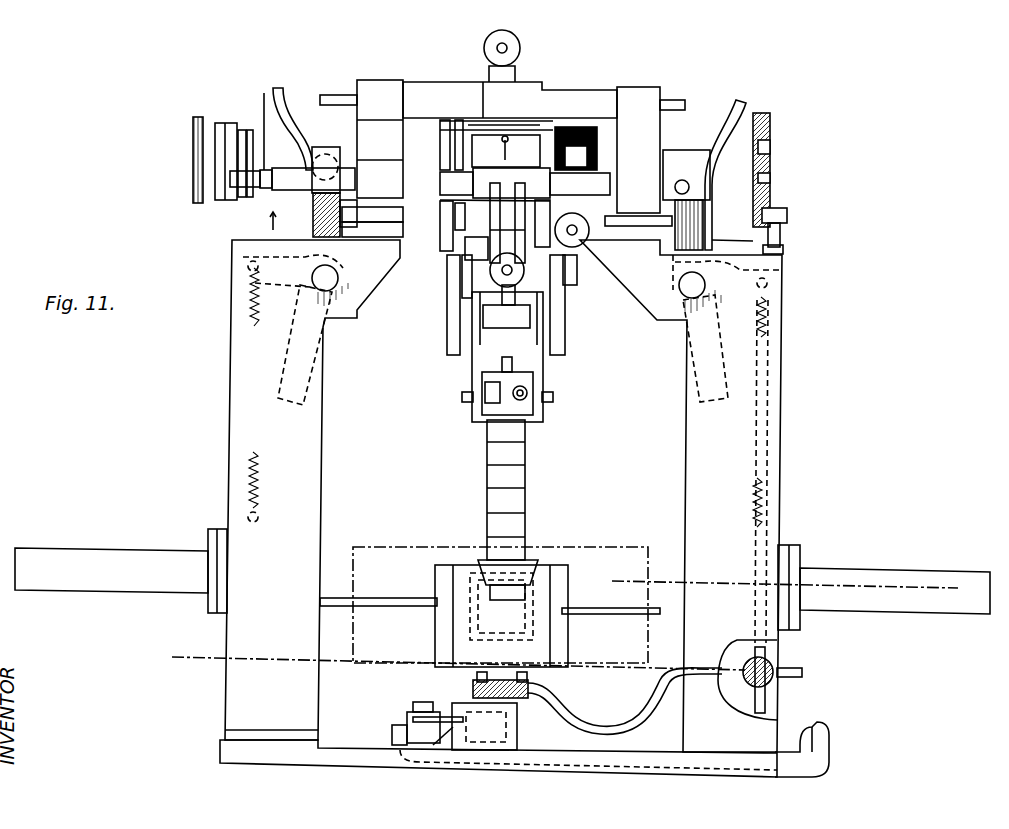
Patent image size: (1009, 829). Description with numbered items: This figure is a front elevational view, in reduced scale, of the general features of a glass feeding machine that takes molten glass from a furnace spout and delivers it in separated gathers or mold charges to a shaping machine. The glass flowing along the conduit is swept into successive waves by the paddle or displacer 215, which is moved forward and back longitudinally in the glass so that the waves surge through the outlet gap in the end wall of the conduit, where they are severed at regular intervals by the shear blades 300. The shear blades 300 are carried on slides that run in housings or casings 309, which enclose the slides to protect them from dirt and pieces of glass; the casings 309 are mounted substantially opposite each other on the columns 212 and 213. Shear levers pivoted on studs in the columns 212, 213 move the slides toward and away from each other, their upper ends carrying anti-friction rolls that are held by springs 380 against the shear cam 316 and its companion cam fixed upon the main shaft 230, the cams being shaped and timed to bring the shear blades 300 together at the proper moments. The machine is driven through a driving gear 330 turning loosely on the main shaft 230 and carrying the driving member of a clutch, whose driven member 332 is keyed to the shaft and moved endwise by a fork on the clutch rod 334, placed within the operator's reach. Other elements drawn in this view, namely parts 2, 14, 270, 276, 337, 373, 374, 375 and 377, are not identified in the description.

The shaft axis / gear 2 is at (885, 672).
The center line of shaft 14 is at (788, 587).
The column 212 is at (783, 329).
The column 213 is at (231, 323).
The paddle or displacer 215 is at (527, 560).
The main shaft 230 is at (190, 162).
The die housing 270 is at (455, 573).
The die block 276 is at (510, 593).
The shear blades 300 is at (412, 607).
The housings or casings 309 is at (97, 545).
The shear cam 316 is at (272, 98).
The driving gear 330 is at (198, 197).
The driven member of the clutch 332 is at (253, 227).
The clutch rod 334 is at (263, 193).
The collar 337 is at (223, 200).
The roller 373 is at (336, 290).
The slide block 374 is at (672, 167).
The guard arm 375 is at (753, 113).
The lever 377 is at (330, 322).
The springs 380 is at (247, 468).